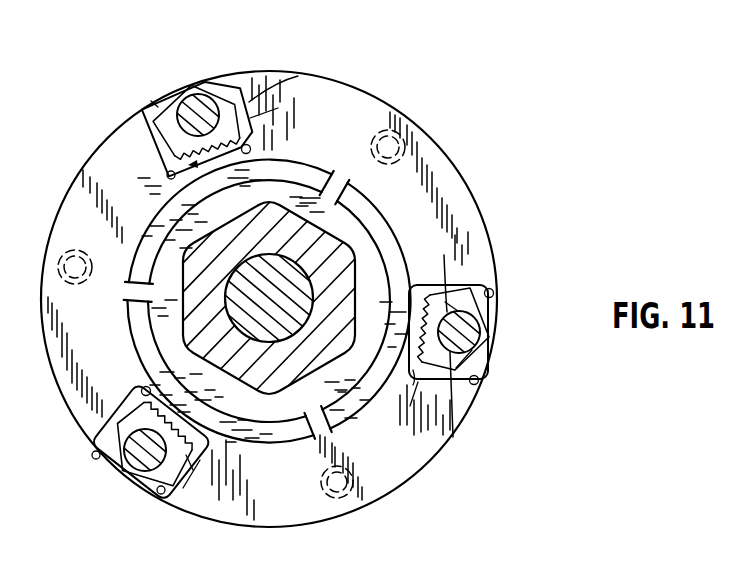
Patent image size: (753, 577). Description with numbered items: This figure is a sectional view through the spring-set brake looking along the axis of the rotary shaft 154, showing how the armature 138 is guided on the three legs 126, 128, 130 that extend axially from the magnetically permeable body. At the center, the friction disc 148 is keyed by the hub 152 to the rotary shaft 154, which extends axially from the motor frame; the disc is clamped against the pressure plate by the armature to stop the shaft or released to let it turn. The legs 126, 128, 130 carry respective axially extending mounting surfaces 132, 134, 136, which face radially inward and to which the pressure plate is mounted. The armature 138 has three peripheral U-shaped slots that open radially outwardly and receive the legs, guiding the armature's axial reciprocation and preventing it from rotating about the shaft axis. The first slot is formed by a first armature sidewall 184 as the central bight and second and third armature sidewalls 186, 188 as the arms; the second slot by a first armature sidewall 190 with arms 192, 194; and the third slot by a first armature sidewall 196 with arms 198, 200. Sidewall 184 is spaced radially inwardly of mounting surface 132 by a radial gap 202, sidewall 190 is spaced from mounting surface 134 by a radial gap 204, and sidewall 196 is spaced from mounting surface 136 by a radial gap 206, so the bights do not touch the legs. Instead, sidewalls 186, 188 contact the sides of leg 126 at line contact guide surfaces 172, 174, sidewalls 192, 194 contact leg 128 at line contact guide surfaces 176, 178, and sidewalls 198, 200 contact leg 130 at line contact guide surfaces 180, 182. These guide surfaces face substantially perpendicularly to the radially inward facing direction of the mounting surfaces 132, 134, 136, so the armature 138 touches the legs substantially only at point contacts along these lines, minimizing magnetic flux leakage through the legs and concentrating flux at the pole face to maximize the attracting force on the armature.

The leg 126 is at (481, 341).
The leg 128 is at (124, 476).
The leg 130 is at (205, 82).
The mounting surface 132 is at (413, 385).
The mounting surface 134 is at (193, 470).
The mounting surface 136 is at (278, 108).
The armature 138 is at (453, 197).
The friction disc 148 is at (398, 244).
The hub 152 is at (330, 258).
The rotary shaft 154 is at (300, 328).
The line contact guide surface 172 is at (465, 285).
The line contact guide surface 174 is at (453, 438).
The line contact guide surface 176 is at (183, 488).
The line contact guide surface 178 is at (118, 430).
The line contact guide surface 180 is at (155, 138).
The line contact guide surface 182 is at (298, 76).
The first armature sidewall 184 is at (410, 406).
The second armature sidewall 186 is at (493, 297).
The third armature sidewall 188 is at (479, 384).
The first armature sidewall 190 is at (142, 388).
The second armature sidewall 192 is at (158, 494).
The third armature sidewall 194 is at (93, 459).
The first armature sidewall 196 is at (250, 150).
The second armature sidewall 198 is at (155, 103).
The third armature sidewall 200 is at (238, 87).
The radial gap 202 is at (423, 296).
The radial gap 204 is at (191, 438).
The radial gap 206 is at (198, 170).